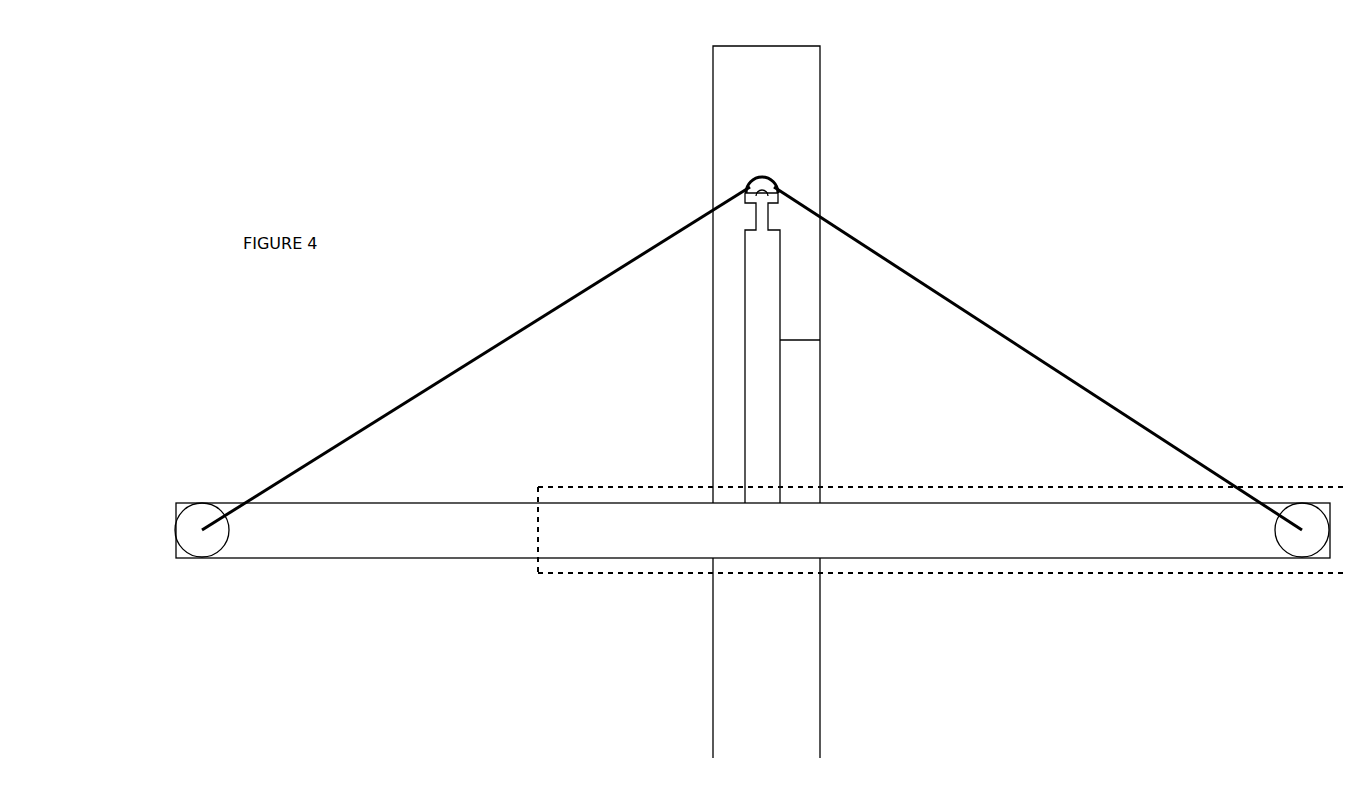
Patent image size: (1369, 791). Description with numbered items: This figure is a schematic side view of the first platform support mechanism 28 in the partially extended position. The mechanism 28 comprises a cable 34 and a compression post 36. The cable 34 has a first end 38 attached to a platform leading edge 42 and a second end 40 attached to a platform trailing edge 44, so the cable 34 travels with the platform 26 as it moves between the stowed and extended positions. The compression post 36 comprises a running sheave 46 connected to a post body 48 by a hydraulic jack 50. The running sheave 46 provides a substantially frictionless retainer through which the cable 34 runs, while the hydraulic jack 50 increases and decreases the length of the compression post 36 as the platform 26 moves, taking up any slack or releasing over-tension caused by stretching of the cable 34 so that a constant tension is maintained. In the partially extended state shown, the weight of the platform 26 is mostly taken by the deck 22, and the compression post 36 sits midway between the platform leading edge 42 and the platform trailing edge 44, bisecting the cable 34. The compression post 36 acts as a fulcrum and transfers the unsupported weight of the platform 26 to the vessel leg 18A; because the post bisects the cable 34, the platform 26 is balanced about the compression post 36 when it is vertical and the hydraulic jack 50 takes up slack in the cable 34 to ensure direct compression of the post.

The vessel leg 18A is at (820, 66).
The deck 22 is at (1040, 487).
The platform 26 is at (465, 503).
The first platform support mechanism 28 is at (958, 200).
The cable 34 is at (960, 305).
The compression post 36 is at (814, 341).
The first end 38 is at (198, 532).
The second end 40 is at (1302, 528).
The platform leading edge 42 is at (177, 557).
The platform trailing edge 44 is at (1315, 557).
The running sheave 46 is at (768, 182).
The post body 48 is at (770, 272).
The hydraulic jack 50 is at (766, 212).